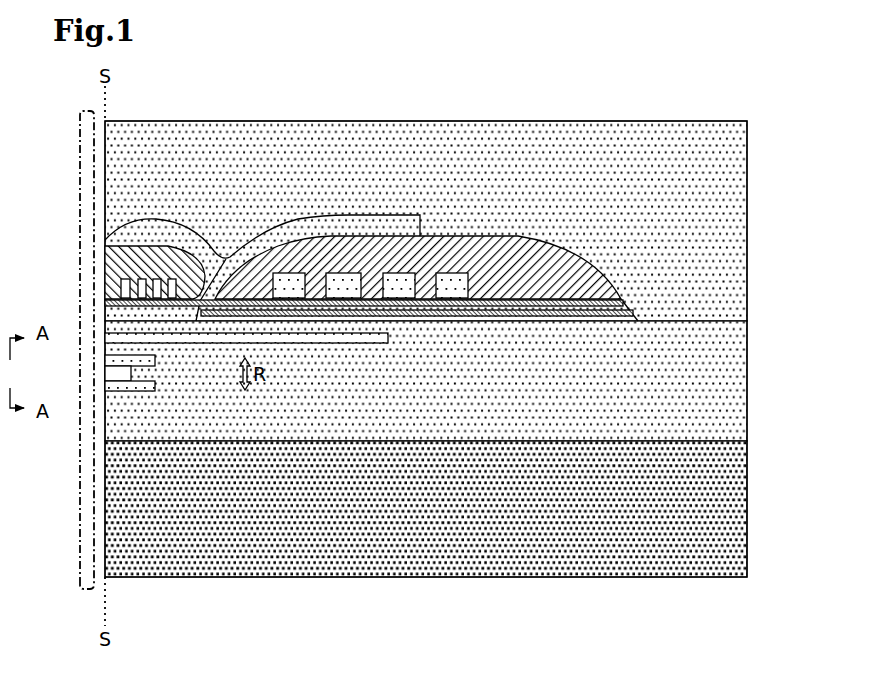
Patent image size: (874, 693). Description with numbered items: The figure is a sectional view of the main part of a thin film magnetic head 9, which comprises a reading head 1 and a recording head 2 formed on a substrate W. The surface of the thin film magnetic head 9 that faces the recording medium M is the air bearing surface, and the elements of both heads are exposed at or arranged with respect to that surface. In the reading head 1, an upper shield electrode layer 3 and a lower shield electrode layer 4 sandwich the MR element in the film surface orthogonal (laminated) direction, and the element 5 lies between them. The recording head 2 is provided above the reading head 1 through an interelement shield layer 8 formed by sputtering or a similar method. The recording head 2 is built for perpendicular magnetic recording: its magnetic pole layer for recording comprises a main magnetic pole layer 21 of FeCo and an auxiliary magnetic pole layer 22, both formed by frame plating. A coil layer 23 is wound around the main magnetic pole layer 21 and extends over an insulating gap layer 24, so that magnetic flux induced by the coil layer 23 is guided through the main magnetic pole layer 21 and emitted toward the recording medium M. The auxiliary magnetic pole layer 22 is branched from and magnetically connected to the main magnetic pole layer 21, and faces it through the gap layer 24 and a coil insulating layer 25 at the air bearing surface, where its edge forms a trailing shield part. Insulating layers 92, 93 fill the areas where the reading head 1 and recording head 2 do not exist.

The reading head 1 is at (132, 371).
The recording head 2 is at (334, 246).
The upper shield electrode layer 3 is at (97, 357).
The lower shield electrode layer 4 is at (97, 378).
The magnetoresistive effect element 5 is at (97, 368).
The interelement shield layer 8 is at (97, 331).
The thin film magnetic head 9 is at (347, 110).
The main magnetic pole layer 21 is at (98, 305).
The auxiliary magnetic pole layer 22 is at (98, 232).
The coil layer 23 is at (173, 232).
The gap layer 24 is at (98, 287).
The coil insulating layer 25 is at (98, 253).
The insulating layer 92 is at (739, 345).
The insulating layer 93 is at (739, 233).
The substrate W is at (739, 468).
The recording medium M is at (72, 538).